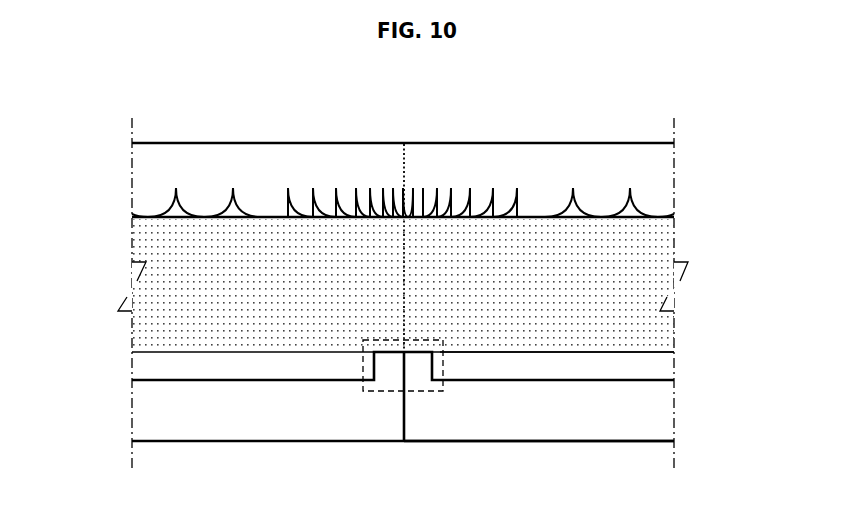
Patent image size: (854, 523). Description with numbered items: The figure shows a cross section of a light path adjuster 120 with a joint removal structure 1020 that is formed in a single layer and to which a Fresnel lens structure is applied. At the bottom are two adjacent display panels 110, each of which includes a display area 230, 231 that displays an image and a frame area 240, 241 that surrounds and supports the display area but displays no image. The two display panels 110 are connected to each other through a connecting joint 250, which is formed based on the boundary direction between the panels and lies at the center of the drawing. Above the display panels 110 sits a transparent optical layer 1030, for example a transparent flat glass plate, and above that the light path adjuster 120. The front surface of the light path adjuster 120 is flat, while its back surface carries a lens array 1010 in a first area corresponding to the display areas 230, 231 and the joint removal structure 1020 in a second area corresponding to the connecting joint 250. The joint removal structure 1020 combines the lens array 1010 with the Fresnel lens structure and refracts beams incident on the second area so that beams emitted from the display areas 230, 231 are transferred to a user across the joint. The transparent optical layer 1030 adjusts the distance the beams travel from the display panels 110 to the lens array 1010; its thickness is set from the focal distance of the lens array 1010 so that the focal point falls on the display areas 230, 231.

The display panels 110 is at (680, 352).
The light path adjusters 120 is at (680, 143).
The display area 230 is at (147, 373).
The display area 231 is at (662, 375).
The frame area 240 is at (147, 421).
The frame area 241 is at (662, 422).
The connecting joint 250 is at (423, 393).
The lens array 1010 is at (147, 208).
The joint removal structure 1020 is at (470, 188).
The transparent optical layer 1030 is at (763, 218).